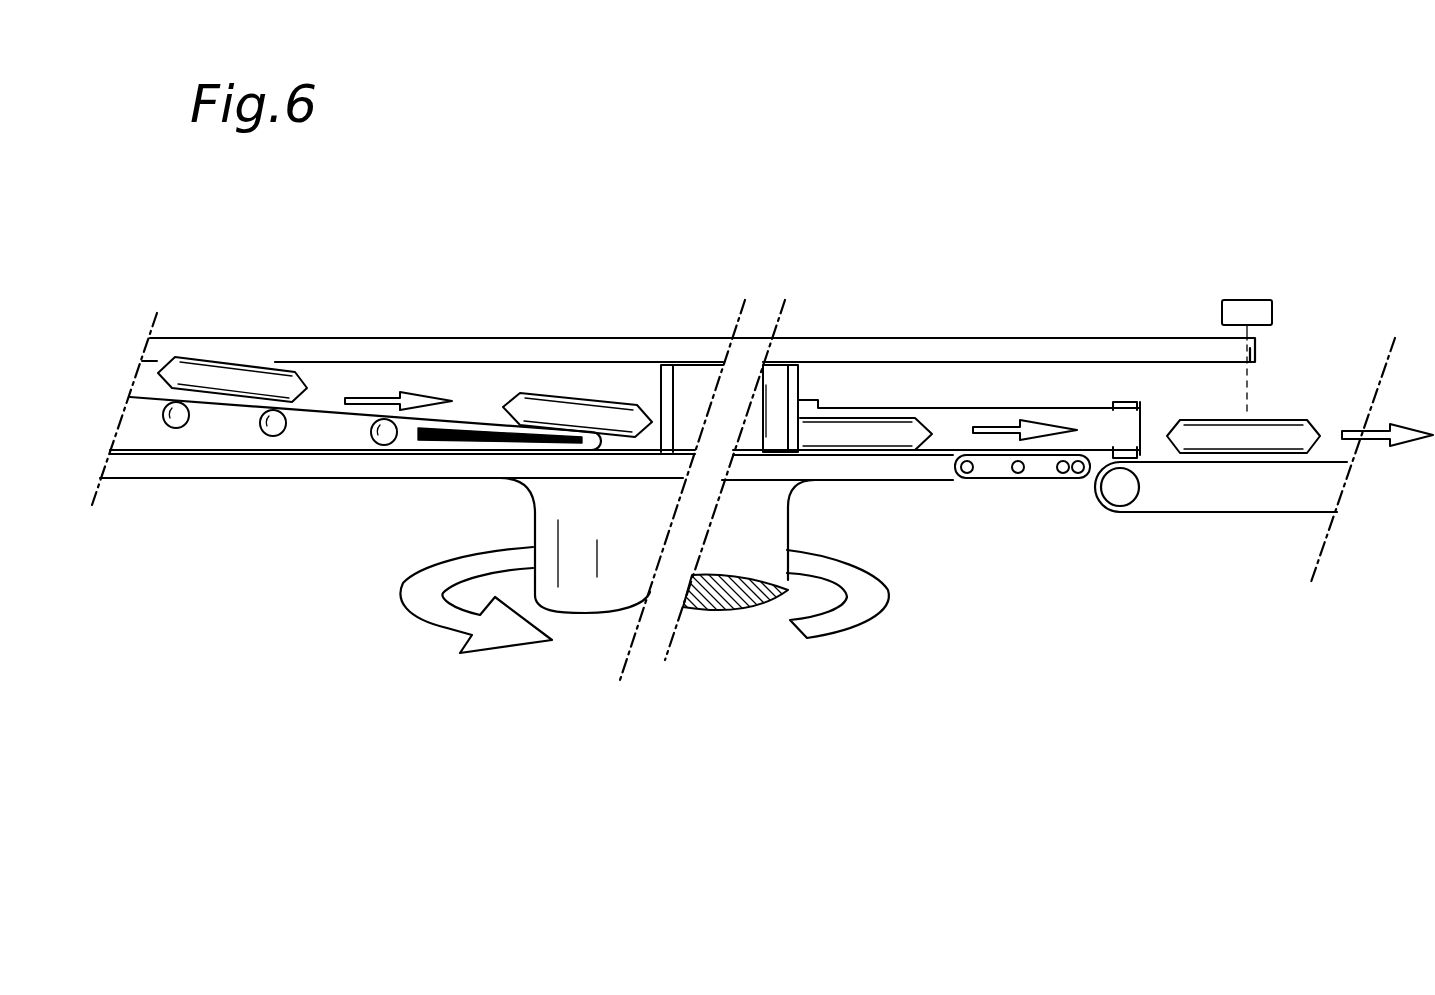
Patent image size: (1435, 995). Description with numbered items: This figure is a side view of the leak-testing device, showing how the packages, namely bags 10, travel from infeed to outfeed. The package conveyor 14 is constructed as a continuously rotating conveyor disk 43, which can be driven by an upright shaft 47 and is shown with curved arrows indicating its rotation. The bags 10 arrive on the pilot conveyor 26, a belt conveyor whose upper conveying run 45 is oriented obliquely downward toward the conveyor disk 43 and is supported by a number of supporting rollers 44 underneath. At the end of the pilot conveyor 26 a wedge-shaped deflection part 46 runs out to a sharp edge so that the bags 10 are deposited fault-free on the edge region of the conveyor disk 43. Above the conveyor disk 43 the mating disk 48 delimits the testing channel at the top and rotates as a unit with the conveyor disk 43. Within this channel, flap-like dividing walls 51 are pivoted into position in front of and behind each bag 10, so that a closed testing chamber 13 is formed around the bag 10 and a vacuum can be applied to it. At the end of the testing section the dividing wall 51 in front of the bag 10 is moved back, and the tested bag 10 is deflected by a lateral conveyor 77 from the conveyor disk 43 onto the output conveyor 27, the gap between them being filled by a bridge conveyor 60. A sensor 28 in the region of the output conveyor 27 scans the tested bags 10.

The bag 10 is at (225, 380).
The testing chamber 13 is at (772, 378).
The package conveyor 14 is at (398, 508).
The pilot conveyor 26 is at (322, 382).
The output conveyor 27 is at (1243, 515).
The sensor 28 is at (1273, 300).
The conveyor disk 43 is at (162, 457).
The supporting rollers 44 is at (273, 437).
The upper conveying run 45 is at (337, 410).
The deflection part 46 is at (430, 443).
The upright shaft 47 is at (743, 550).
The mating disk 48 is at (1015, 332).
The dividing wall 51 is at (663, 372).
The bridge conveyor 60 is at (1027, 490).
The lateral conveyor 77 is at (1088, 423).